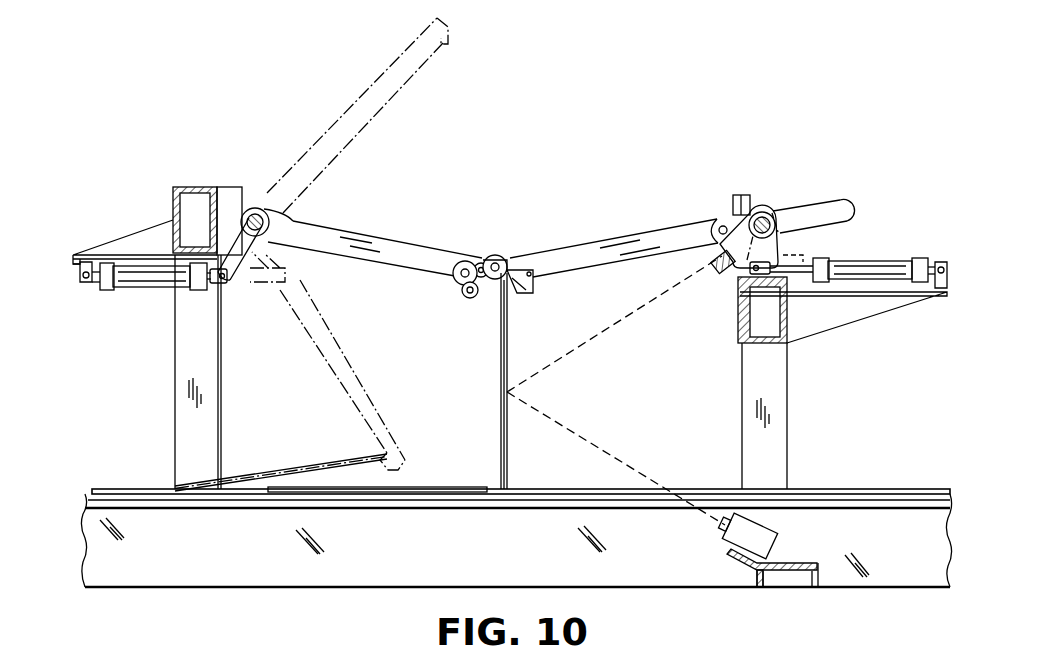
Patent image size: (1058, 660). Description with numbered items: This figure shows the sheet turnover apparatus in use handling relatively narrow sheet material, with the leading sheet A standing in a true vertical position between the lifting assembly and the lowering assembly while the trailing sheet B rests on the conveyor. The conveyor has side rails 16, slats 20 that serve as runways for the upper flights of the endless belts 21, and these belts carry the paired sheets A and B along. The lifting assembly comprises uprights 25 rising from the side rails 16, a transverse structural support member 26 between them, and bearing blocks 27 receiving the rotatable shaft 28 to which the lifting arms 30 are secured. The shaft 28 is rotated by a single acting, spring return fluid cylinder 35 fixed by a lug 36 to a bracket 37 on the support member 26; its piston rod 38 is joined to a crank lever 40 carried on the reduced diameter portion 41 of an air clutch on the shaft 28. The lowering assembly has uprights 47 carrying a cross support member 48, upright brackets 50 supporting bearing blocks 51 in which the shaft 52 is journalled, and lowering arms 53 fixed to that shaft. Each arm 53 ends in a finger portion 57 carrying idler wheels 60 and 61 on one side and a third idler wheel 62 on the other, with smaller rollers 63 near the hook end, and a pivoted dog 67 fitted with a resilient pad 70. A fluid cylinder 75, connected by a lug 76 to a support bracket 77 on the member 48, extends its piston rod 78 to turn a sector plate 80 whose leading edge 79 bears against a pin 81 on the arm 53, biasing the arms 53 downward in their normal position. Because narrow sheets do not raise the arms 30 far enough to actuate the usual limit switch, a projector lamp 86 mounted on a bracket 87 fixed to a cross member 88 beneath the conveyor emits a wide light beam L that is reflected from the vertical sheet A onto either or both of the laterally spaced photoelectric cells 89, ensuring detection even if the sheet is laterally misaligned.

The side rails 16 is at (165, 578).
The slats 20 is at (890, 509).
The endless belts 21 is at (885, 489).
The uprights 25 is at (175, 388).
The structural support member 26 is at (183, 186).
The bearing blocks 27 is at (243, 198).
The shaft 28 is at (257, 208).
The lifting arms 30 is at (356, 238).
The fluid cylinder 35 is at (137, 288).
The lug 36 is at (80, 280).
The bracket 37 is at (135, 233).
The piston rod 38 is at (216, 285).
The crank lever 40 is at (236, 268).
The reduced diameter portion 41 is at (294, 221).
The uprights 47 is at (779, 442).
The cross support member 48 is at (783, 362).
The brackets 50 is at (740, 195).
The bearing blocks 51 is at (758, 212).
The shaft 52 is at (770, 220).
The lowering arms 53 is at (600, 243).
The finger portion 57 is at (510, 260).
The idler wheel 60 is at (496, 255).
The idler wheel 61 is at (453, 278).
The third idler wheel 62 is at (478, 263).
The rollers 63 is at (465, 298).
The dog 67 is at (532, 290).
The pad 70 is at (509, 288).
The fluid cylinder 75 is at (868, 261).
The lug 76 is at (942, 266).
The support bracket 77 is at (858, 320).
The piston rod 78 is at (797, 273).
The leading edge 79 is at (721, 226).
The sector plate 80 is at (727, 247).
The pin 81 is at (724, 242).
The projector lamp 86 is at (770, 538).
The bracket 87 is at (752, 566).
The cross member 88 is at (822, 580).
The photoelectric cells 89 is at (722, 275).
The leading sheet A is at (508, 448).
The trailing sheet B is at (445, 487).
The light beam L is at (605, 440).